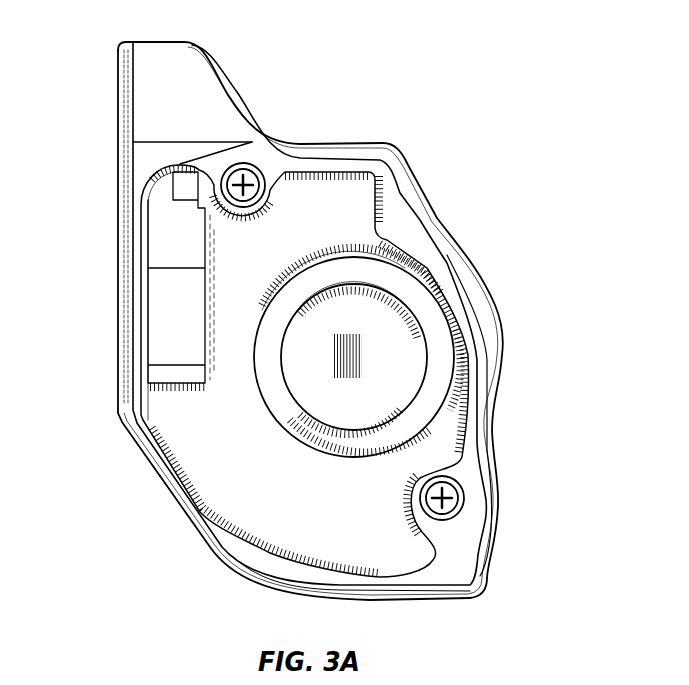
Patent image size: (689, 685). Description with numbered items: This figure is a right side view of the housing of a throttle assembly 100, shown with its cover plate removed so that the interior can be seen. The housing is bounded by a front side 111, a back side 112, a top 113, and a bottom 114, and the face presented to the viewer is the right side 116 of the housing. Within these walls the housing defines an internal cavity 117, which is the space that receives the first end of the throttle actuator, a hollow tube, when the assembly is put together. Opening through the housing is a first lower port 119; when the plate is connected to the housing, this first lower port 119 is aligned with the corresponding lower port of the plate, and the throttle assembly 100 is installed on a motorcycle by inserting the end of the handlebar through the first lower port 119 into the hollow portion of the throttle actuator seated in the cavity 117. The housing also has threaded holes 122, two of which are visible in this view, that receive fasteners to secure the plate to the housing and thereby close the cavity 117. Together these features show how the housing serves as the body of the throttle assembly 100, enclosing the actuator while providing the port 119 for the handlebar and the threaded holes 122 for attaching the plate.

The throttle assembly 100 is at (487, 54).
The front side 111 is at (176, 42).
The back side 112 is at (383, 600).
The top 113 is at (118, 228).
The bottom 114 is at (495, 307).
The right side 116 is at (157, 102).
The internal cavity 117 is at (240, 492).
The first lower port 119 is at (316, 364).
The threaded holes 122 is at (246, 174).